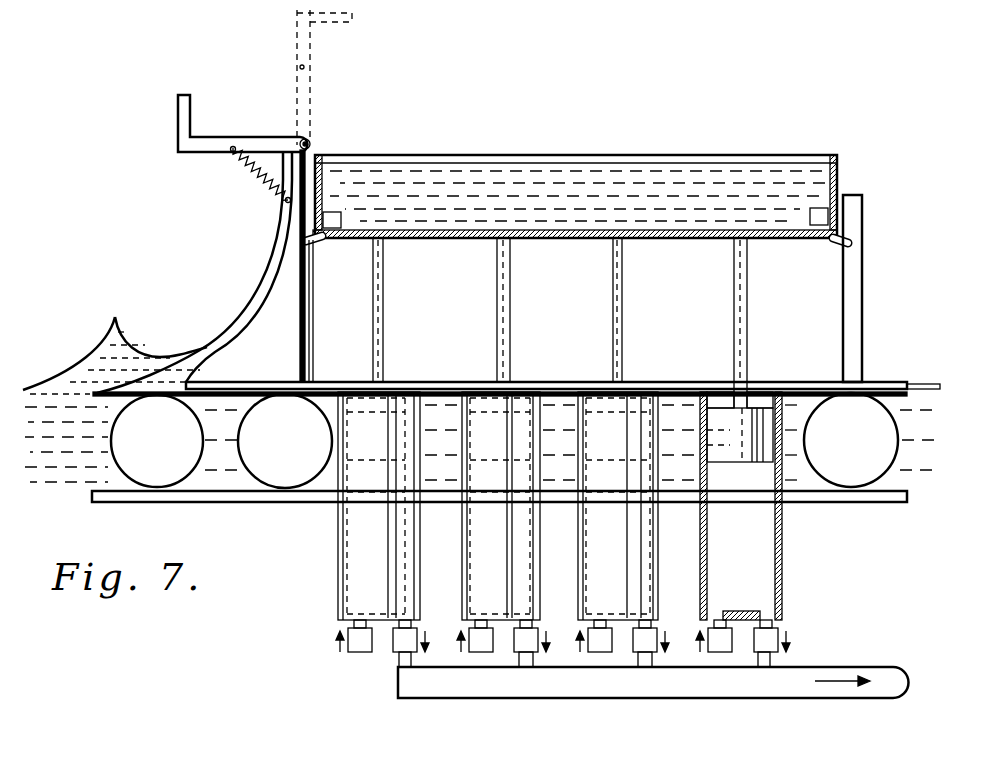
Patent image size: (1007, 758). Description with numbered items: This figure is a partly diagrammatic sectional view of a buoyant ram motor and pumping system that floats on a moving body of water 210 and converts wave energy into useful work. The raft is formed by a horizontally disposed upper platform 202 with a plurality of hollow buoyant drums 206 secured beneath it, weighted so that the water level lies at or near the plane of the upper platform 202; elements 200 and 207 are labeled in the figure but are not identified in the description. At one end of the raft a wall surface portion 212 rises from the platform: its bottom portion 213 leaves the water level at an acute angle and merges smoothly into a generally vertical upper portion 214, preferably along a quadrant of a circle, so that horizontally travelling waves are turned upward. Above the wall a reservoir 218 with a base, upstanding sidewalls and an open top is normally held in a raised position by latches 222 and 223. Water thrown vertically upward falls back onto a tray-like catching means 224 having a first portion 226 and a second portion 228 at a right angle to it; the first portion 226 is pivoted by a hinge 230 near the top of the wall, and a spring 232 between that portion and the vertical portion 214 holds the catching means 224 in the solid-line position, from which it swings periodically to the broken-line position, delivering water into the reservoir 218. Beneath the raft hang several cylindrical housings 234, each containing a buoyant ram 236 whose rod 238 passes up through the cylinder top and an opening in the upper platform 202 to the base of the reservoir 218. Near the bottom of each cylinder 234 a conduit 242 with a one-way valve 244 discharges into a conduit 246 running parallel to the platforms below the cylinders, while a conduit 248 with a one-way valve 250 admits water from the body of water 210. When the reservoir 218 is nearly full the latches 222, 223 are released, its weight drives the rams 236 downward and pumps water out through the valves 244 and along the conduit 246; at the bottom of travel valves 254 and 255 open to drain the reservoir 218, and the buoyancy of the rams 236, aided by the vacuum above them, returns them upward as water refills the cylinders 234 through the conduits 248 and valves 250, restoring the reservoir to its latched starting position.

The discharge manifold 200 is at (780, 700).
The upper platform 202 is at (285, 372).
The buoyant drums 206 is at (182, 450).
The rail 207 is at (212, 497).
The body of water 210 is at (55, 372).
The wall surface portion 212 is at (270, 264).
The bottom portion 213 is at (237, 327).
The upper portion 214 is at (283, 216).
The reservoir 218 is at (893, 122).
The latch 222 is at (316, 245).
The latch 223 is at (840, 243).
The catching means 224 is at (178, 133).
The first portion 226 is at (207, 137).
The second portion 228 is at (186, 95).
The hinge 230 is at (311, 142).
The spring 232 is at (262, 172).
The cylindrical housing 234 is at (473, 560).
The buoyant ram 236 is at (465, 423).
The rod 238 is at (380, 305).
The conduit 242 is at (398, 670).
The one-way valve 244 is at (397, 653).
The conduit 246 is at (870, 668).
The conduit 248 is at (360, 653).
The one-way valve 250 is at (355, 652).
The valve 254 is at (346, 220).
The valve 255 is at (812, 213).